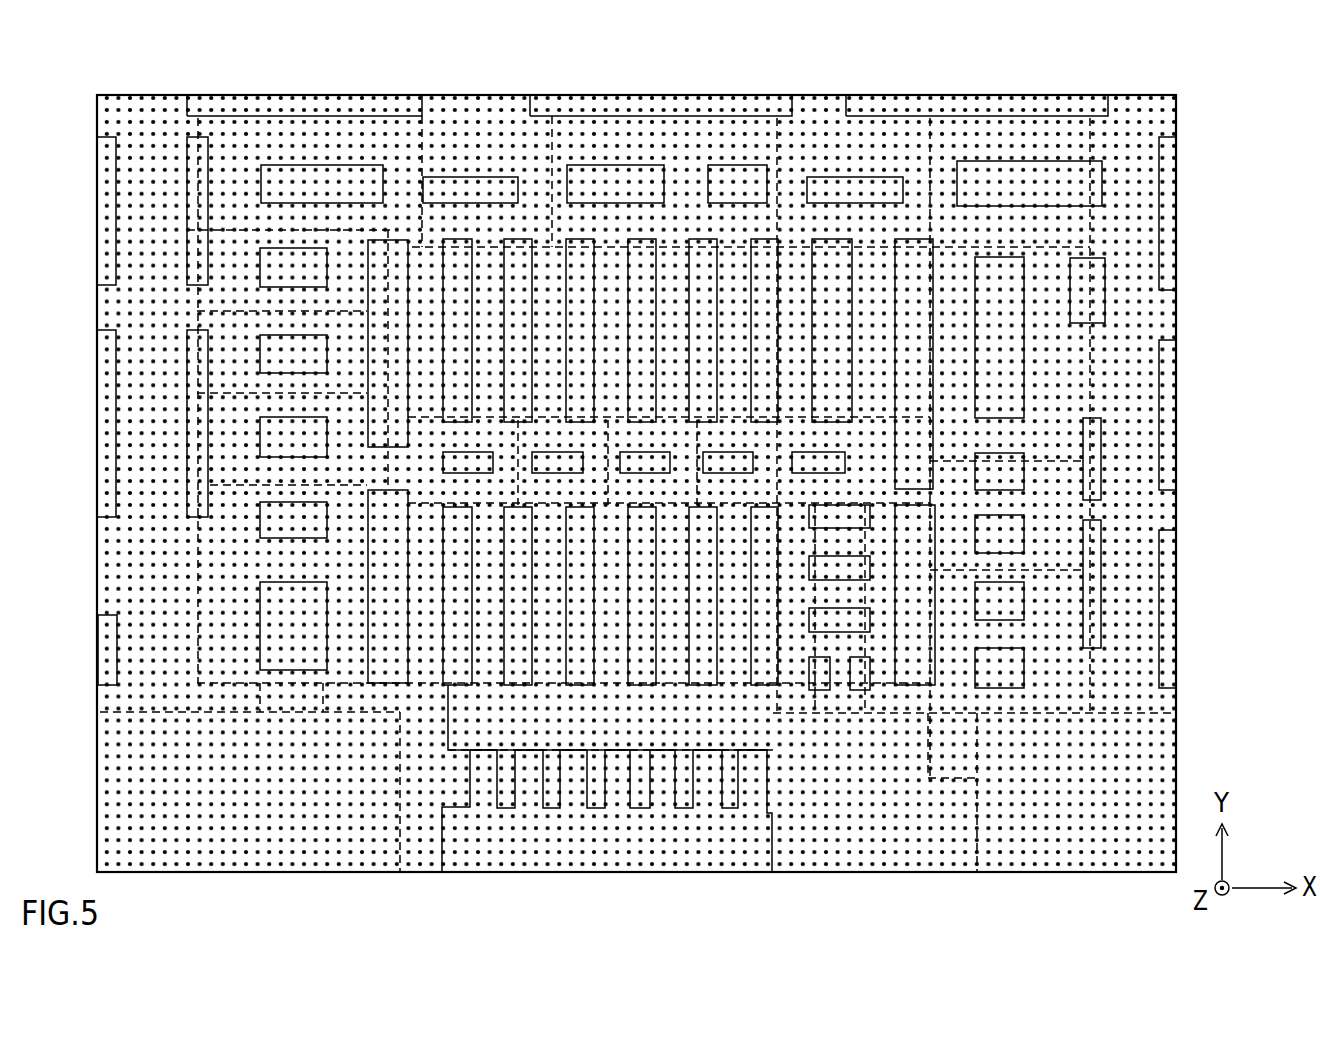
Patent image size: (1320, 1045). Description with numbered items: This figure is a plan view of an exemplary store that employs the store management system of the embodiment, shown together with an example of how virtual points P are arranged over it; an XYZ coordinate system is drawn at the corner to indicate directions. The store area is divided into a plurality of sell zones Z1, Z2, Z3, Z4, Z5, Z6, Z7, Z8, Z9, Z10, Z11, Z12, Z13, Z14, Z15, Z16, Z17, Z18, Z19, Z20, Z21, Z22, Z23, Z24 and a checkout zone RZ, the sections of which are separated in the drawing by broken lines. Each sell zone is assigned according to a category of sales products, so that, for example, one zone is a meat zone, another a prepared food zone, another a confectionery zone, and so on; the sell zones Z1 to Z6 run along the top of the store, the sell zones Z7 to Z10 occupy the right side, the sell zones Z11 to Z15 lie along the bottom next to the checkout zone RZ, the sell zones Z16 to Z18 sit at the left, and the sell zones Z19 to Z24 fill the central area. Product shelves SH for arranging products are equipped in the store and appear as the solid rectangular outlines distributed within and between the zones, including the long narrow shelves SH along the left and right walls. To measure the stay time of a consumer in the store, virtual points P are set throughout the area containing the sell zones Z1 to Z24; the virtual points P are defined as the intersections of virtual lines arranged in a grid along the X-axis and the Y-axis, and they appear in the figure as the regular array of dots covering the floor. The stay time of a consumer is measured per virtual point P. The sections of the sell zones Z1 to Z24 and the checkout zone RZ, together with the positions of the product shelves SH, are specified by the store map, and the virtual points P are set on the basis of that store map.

The virtual point P is at (1172, 119).
The product shelf SH is at (112, 203).
The checkout zone RZ is at (603, 868).
The sell zone Z1 is at (145, 112).
The sell zone Z2 is at (232, 135).
The sell zone Z3 is at (465, 110).
The sell zone Z4 is at (706, 130).
The sell zone Z5 is at (826, 110).
The sell zone Z6 is at (1026, 130).
The sell zone Z7 is at (1160, 313).
The sell zone Z8 is at (1073, 375).
The sell zone Z9 is at (1073, 505).
The sell zone Z10 is at (1073, 665).
The sell zone Z11 is at (892, 697).
The sell zone Z12 is at (833, 697).
The sell zone Z13 is at (752, 735).
The sell zone Z14 is at (423, 677).
The sell zone Z15 is at (222, 660).
The sell zone Z16 is at (218, 457).
The sell zone Z17 is at (218, 360).
The sell zone Z18 is at (218, 302).
The sell zone Z19 is at (612, 272).
The sell zone Z20 is at (893, 449).
The sell zone Z21 is at (764, 449).
The sell zone Z22 is at (688, 449).
The sell zone Z23 is at (600, 449).
The sell zone Z24 is at (511, 449).